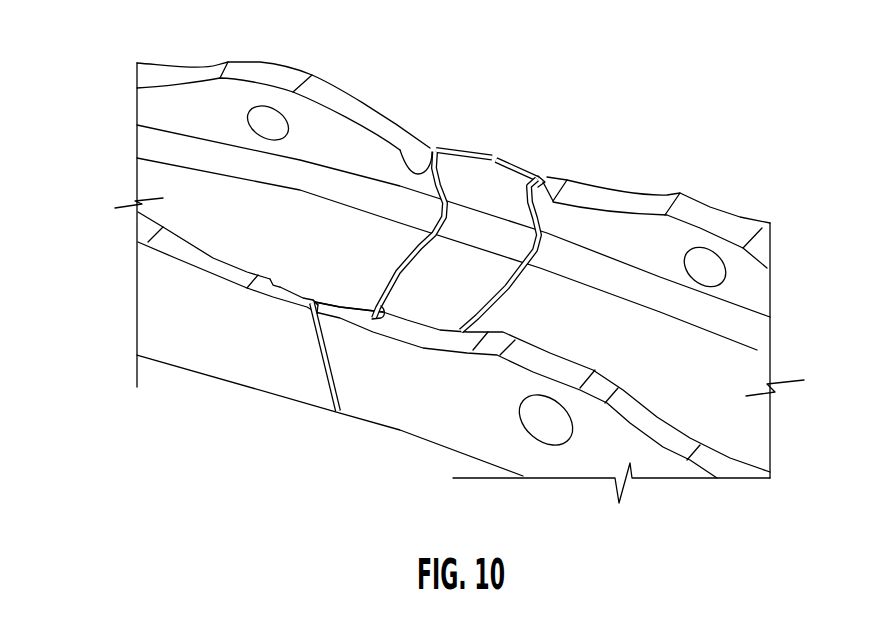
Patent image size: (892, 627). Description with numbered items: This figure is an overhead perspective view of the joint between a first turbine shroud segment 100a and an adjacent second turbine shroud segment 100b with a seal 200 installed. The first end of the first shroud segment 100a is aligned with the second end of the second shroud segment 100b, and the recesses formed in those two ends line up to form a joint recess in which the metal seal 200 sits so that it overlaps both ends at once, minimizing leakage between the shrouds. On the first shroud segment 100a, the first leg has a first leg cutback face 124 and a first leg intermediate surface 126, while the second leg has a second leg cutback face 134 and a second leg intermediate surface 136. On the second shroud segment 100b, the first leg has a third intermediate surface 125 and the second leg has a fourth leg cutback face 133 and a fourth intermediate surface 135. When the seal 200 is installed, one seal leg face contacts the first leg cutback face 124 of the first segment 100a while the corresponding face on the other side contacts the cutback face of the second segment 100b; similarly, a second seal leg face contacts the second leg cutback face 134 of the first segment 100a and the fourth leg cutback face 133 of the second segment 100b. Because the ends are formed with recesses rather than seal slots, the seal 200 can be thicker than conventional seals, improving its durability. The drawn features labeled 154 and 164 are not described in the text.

The first turbine shroud segment 100a is at (137, 170).
The second turbine shroud segment 100b is at (657, 182).
The seal 200 is at (515, 203).
The first leg cutback face 124 is at (425, 172).
The first leg intermediate surface 126 is at (458, 147).
The third intermediate surface 125 is at (523, 170).
The second leg cutback face 134 is at (275, 281).
The second leg intermediate surface 136 is at (292, 297).
The first leg of connector 154 is at (408, 255).
The fourth intermediate surface 135 is at (347, 307).
The fourth leg cutback face 133 is at (383, 306).
The second leg of connector 164 is at (520, 285).